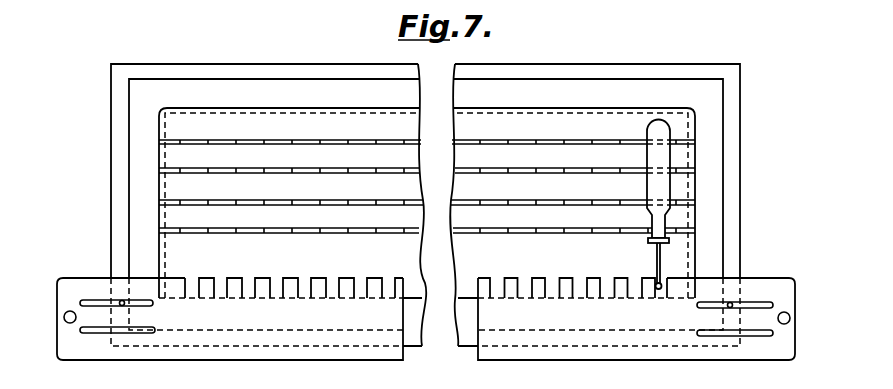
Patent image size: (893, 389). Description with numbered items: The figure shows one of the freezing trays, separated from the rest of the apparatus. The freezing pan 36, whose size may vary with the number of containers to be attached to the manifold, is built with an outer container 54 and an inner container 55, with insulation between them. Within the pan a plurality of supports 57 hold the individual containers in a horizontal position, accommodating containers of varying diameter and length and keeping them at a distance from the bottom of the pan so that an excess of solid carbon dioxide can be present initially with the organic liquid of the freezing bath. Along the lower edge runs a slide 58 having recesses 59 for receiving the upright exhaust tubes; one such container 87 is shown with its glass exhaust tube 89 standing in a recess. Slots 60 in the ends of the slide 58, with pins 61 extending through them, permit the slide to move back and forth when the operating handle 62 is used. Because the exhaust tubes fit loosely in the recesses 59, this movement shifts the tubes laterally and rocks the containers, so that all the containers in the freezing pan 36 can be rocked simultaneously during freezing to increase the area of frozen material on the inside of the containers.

The freezing pan 36 is at (747, 125).
The outer container 54 is at (738, 204).
The inner container 55 is at (710, 180).
The supports 57 is at (546, 200).
The slide 58 is at (270, 358).
The recesses 59 is at (582, 278).
The slots 60 is at (102, 332).
The pins 61 is at (122, 300).
The operating handle 62 is at (66, 311).
The container 87 is at (655, 156).
The glass exhaust tube 89 is at (656, 283).